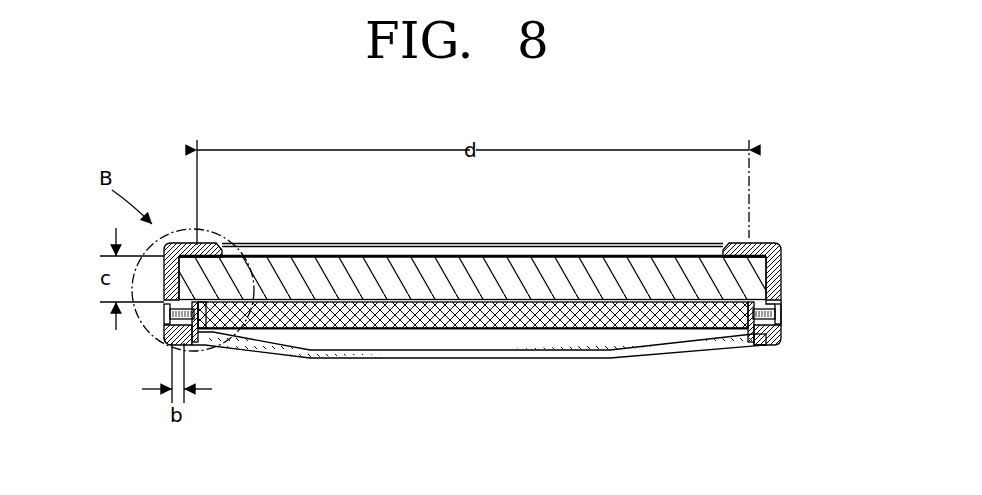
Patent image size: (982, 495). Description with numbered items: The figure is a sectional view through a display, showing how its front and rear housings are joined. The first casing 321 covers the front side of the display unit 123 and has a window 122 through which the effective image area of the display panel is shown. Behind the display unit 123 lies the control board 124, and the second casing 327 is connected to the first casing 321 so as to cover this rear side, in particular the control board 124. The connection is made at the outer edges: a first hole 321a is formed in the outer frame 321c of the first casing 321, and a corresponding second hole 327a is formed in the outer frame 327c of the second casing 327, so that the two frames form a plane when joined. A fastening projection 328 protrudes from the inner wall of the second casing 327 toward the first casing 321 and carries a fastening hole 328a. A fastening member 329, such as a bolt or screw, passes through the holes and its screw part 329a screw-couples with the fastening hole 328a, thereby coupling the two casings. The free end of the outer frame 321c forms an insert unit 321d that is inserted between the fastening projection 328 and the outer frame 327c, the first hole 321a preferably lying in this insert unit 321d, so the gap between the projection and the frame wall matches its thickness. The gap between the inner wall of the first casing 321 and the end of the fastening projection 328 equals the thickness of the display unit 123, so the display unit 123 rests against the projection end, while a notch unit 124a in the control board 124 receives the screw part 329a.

The first casing 321 is at (185, 243).
The first hole 321a is at (165, 318).
The outer frame 321c is at (775, 262).
The insert unit 321d is at (781, 330).
The window 122 is at (221, 250).
The display unit 123 is at (470, 257).
The control board 124 is at (390, 318).
The notch unit 124a is at (210, 340).
The second casing 327 is at (465, 358).
The second hole 327a is at (165, 338).
The outer frame 327c is at (168, 345).
The fastening projection 328 is at (765, 342).
The fastening hole 328a is at (750, 330).
The fastening member 329 is at (782, 312).
The screw part 329a is at (780, 301).